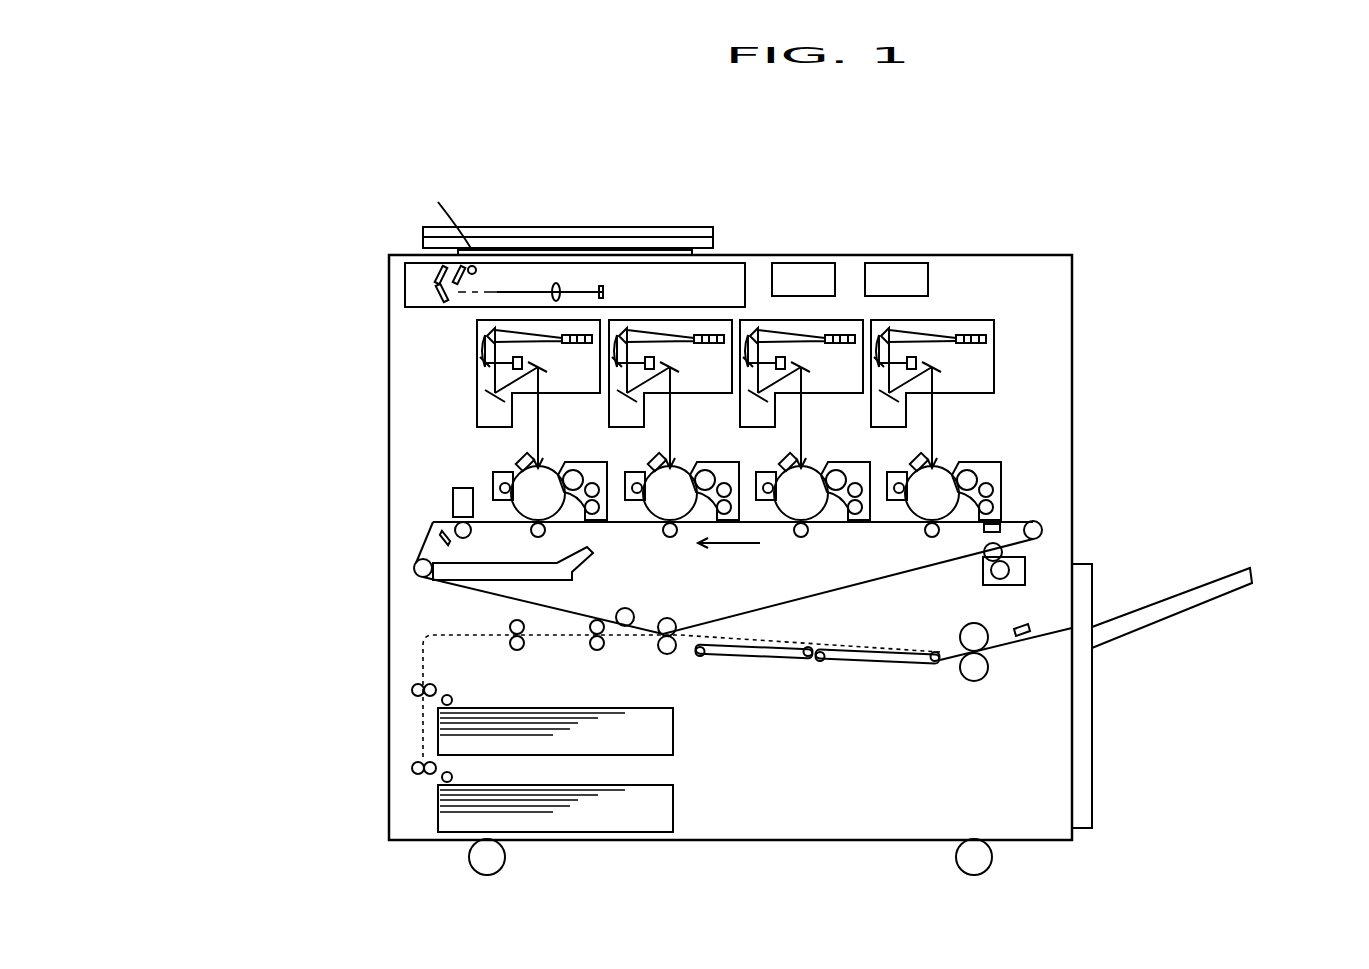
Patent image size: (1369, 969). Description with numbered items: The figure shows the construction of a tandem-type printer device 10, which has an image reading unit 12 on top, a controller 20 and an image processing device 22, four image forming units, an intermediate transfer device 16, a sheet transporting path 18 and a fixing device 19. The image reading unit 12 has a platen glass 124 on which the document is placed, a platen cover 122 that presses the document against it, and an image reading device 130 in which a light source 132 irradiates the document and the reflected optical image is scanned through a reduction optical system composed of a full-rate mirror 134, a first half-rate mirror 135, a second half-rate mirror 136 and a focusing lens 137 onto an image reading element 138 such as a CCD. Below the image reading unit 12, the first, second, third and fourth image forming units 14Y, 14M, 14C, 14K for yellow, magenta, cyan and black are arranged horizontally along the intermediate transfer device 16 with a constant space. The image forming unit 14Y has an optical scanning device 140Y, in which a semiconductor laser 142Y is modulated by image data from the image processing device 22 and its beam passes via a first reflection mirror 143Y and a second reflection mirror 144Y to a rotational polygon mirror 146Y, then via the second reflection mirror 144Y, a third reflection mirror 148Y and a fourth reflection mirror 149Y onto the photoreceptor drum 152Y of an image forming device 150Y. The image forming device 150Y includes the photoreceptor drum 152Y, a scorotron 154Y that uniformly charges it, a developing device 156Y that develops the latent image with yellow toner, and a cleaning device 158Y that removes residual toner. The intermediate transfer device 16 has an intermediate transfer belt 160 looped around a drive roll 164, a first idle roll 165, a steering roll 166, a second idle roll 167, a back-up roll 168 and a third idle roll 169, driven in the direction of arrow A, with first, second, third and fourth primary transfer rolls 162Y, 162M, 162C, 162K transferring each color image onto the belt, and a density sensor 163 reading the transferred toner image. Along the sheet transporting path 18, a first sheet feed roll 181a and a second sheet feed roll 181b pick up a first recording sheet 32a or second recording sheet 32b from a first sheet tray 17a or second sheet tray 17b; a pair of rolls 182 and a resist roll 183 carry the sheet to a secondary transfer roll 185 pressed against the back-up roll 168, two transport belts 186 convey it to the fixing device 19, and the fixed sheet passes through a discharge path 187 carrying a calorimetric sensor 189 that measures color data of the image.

The printer device 10 is at (840, 930).
The image reading unit 12 is at (605, 249).
The platen cover 122 is at (542, 230).
The platen glass 124 is at (683, 248).
The image reading device 130 is at (748, 276).
The light source 132 is at (478, 271).
The full-rate mirror 134 is at (458, 284).
The first half-rate mirror 135 is at (436, 270).
The second half-rate mirror 136 is at (438, 300).
The focusing lens 137 is at (559, 285).
The image reading element 138 is at (606, 295).
The controller 20 is at (808, 263).
The image processing device 22 is at (910, 263).
The fourth image forming unit 14K is at (522, 445).
The third image forming unit 14C is at (654, 445).
The second image forming unit 14M is at (785, 445).
The first image forming unit 14Y is at (1055, 415).
The optical scanning device 140Y is at (1055, 362).
The semiconductor laser 142Y is at (916, 363).
The first reflection mirror 143Y is at (876, 392).
The second reflection mirror 144Y is at (887, 328).
The rotational polygon mirror 146Y is at (970, 335).
The third reflection mirror 148Y is at (880, 405).
The fourth reflection mirror 149Y is at (940, 373).
The image forming device 150Y is at (1047, 486).
The photoreceptor drum 152Y is at (948, 462).
The scorotron 154Y is at (915, 458).
The developing device 156Y is at (1003, 493).
The cleaning device 158Y is at (893, 504).
The intermediate transfer device 16 is at (861, 539).
The intermediate transfer belt 160 is at (880, 590).
The fourth primary transfer roll 162K is at (538, 537).
The third primary transfer roll 162C is at (670, 537).
The second primary transfer roll 162M is at (801, 537).
The first primary transfer roll 162Y is at (932, 537).
The density sensor 163 is at (463, 485).
The drive roll 164 is at (1034, 540).
The first idle roll 165 is at (460, 523).
The steering roll 166 is at (422, 558).
The second idle roll 167 is at (622, 608).
The back-up roll 168 is at (660, 618).
The third idle roll 169 is at (986, 552).
The arrow A is at (745, 550).
The sheet transporting path 18 is at (572, 694).
The first sheet feed roll 181a is at (450, 703).
The second sheet feed roll 181b is at (461, 768).
The pair of rolls 182 is at (510, 648).
The resist roll 183 is at (597, 650).
The secondary transfer roll 185 is at (660, 652).
The transport belts 186 is at (780, 660).
The discharge path 187 is at (1017, 645).
The calorimetric sensor 189 is at (1038, 613).
The first sheet tray 17a is at (674, 716).
The second sheet tray 17b is at (604, 793).
The first recording sheet 32a is at (513, 713).
The second recording sheet 32b is at (522, 790).
The fixing device 19 is at (953, 682).